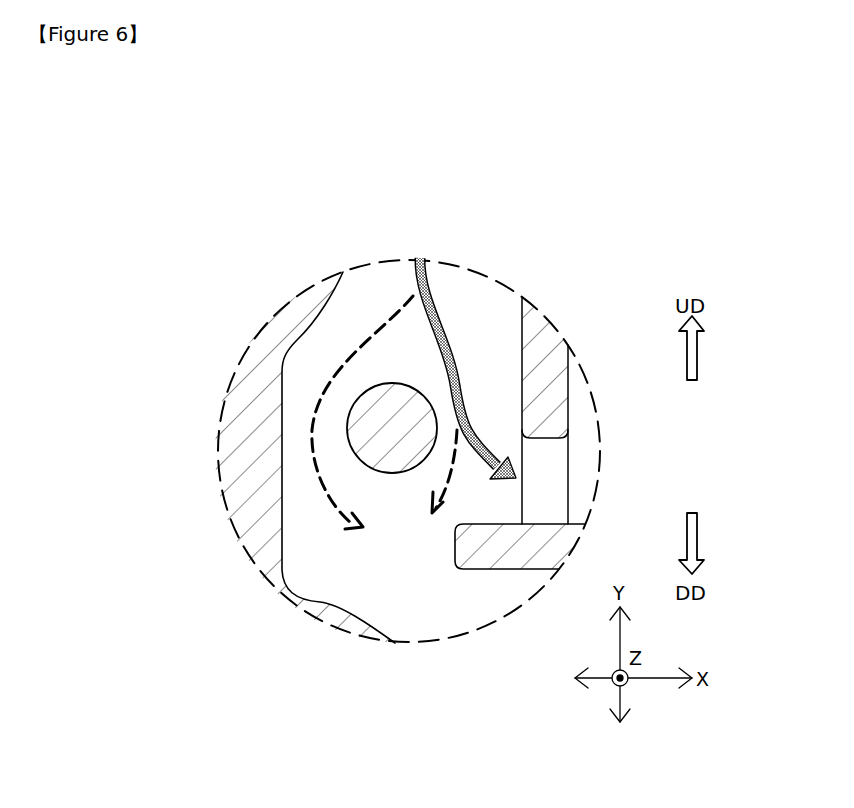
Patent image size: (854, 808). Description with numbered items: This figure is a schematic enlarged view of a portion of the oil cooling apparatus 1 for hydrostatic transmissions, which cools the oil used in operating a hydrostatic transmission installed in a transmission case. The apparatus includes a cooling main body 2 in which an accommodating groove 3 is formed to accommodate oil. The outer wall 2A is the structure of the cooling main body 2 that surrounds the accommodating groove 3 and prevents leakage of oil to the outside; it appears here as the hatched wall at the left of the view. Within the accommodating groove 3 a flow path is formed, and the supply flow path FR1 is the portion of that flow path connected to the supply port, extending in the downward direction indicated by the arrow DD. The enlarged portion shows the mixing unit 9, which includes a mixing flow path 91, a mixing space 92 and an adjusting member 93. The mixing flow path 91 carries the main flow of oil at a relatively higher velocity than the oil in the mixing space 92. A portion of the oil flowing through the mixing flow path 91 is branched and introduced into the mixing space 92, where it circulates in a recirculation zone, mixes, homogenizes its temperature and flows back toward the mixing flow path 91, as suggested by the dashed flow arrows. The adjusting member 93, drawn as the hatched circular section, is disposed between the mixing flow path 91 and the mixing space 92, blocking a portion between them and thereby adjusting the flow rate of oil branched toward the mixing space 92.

The oil cooling apparatus 1 is at (343, 152).
The cooling main body 2 is at (305, 398).
The outer wall 2A is at (303, 318).
The accommodating groove 3 is at (510, 186).
The supply flow path FR1 is at (483, 323).
The mixing unit 9 is at (145, 425).
The mixing flow path 91 is at (430, 384).
The mixing space 92 is at (323, 551).
The adjusting member 93 is at (397, 426).